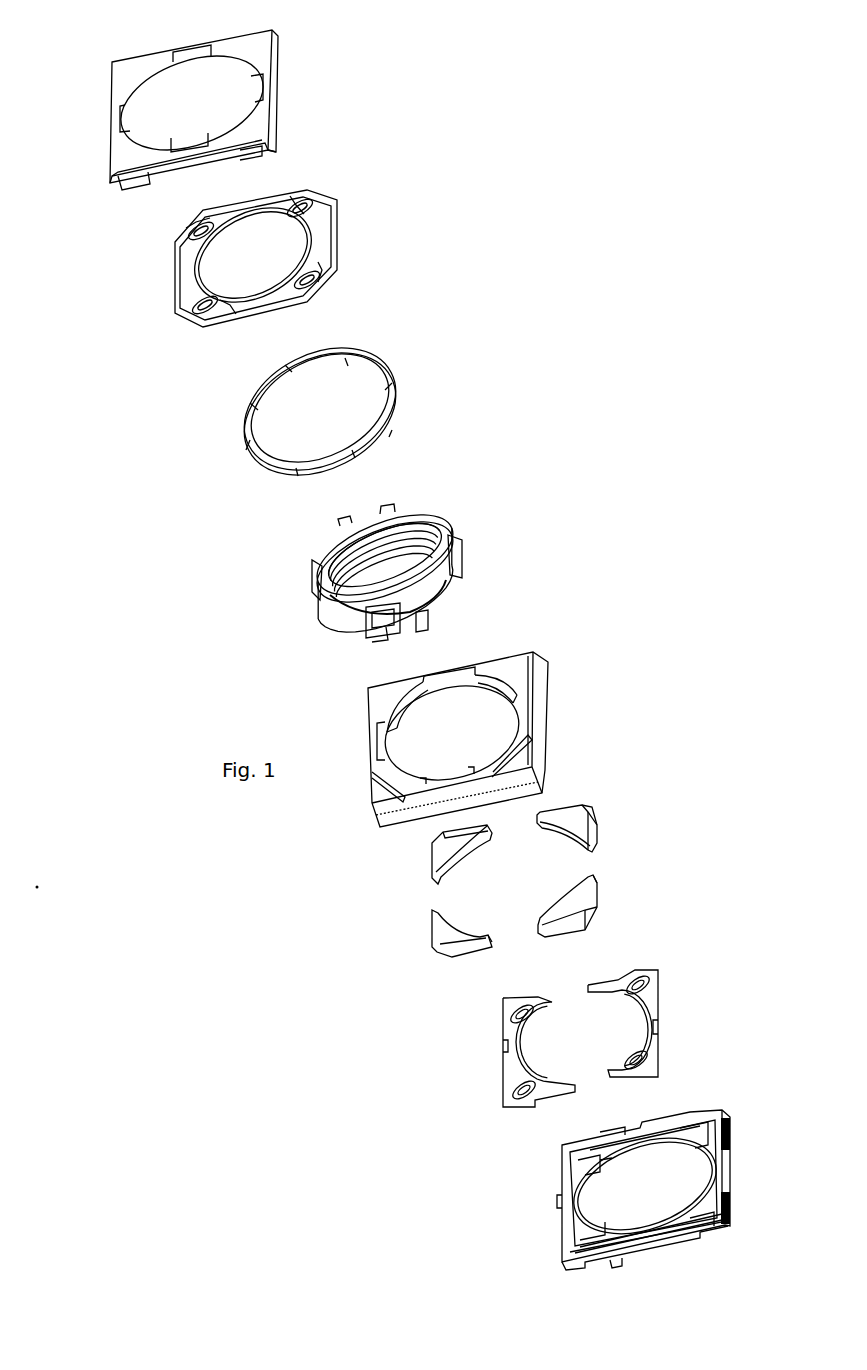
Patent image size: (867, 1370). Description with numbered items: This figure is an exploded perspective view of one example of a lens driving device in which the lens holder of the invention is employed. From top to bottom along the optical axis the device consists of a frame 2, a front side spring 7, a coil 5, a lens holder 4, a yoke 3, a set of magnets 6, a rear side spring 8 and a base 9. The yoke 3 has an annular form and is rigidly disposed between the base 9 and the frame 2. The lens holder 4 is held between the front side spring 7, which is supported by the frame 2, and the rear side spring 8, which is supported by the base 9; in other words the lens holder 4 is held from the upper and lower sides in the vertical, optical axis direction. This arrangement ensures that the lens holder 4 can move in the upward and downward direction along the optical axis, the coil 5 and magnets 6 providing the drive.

The frame 2 is at (257, 60).
The yoke 3 is at (520, 680).
The lens holder 4 is at (437, 523).
The coil 5 is at (392, 383).
The magnet 6 is at (588, 810).
The front side spring 7 is at (323, 222).
The rear side spring 8 is at (655, 970).
The base 9 is at (672, 1112).